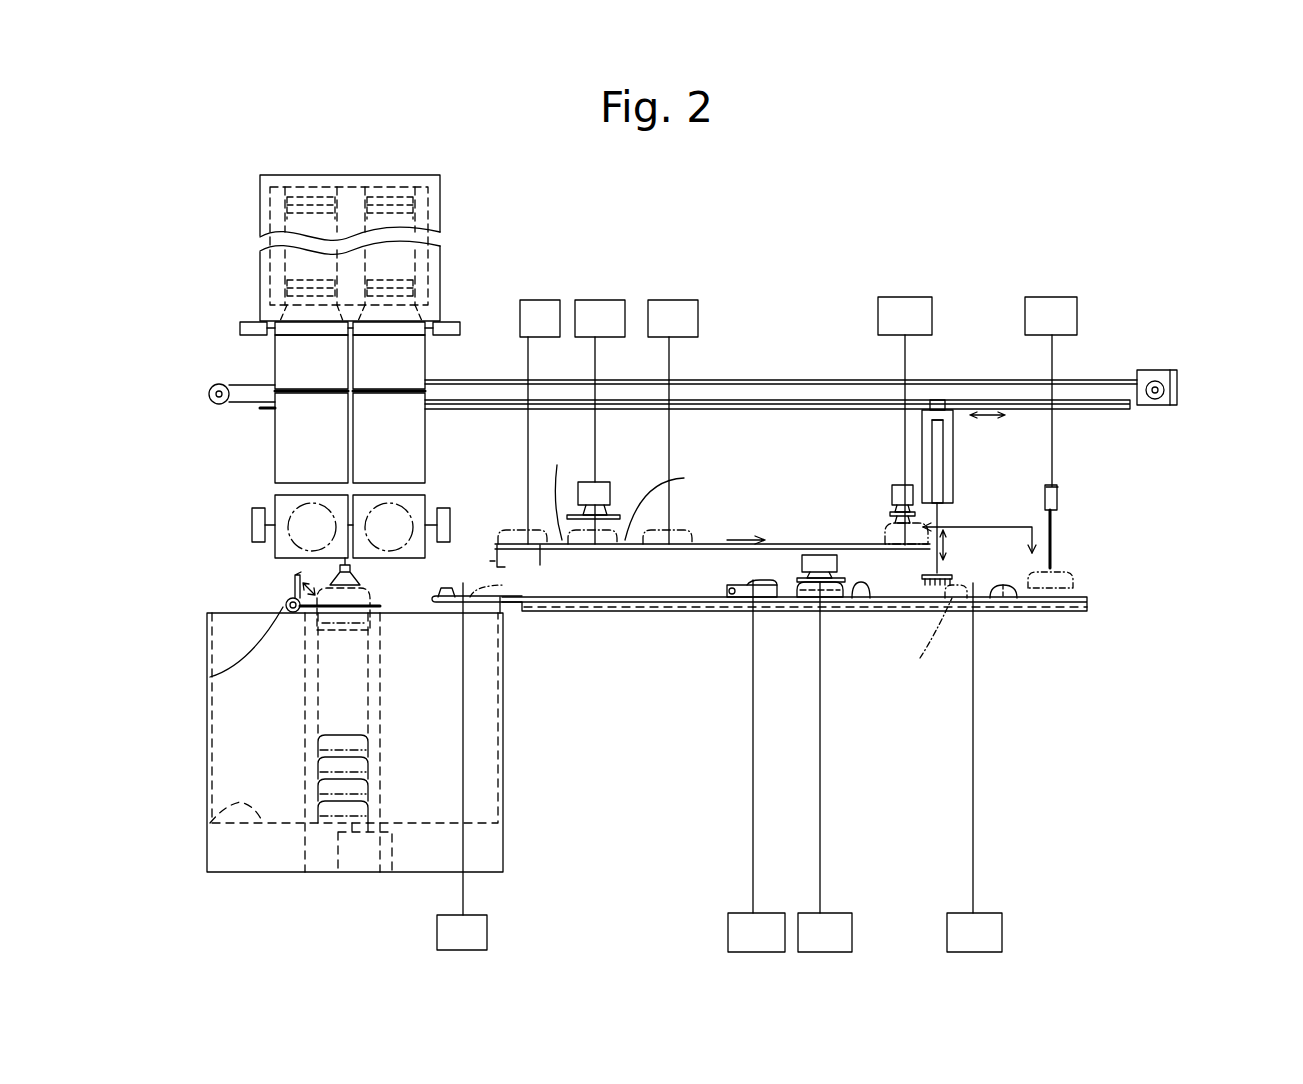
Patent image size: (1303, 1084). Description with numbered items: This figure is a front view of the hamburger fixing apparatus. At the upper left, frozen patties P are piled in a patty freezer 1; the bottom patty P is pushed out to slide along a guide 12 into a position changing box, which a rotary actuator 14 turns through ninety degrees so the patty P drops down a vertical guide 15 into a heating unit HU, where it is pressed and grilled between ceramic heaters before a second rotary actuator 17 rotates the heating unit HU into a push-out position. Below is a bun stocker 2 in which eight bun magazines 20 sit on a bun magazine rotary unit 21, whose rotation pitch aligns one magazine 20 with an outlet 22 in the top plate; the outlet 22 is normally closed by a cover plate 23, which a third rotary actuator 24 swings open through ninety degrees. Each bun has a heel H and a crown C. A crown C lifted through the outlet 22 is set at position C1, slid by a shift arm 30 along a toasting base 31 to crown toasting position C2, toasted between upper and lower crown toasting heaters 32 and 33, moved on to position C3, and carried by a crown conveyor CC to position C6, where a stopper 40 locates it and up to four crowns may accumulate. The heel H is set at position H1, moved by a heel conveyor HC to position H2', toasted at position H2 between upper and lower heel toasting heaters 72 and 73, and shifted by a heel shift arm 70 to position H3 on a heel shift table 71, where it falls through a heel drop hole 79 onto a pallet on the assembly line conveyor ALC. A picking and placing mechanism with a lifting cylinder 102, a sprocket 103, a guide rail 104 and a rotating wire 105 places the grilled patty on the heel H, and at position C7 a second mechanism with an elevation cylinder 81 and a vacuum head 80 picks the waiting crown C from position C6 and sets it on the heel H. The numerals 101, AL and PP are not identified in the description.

The patty freezer 1 is at (250, 197).
The patty P is at (415, 205).
The rotary actuator 14 is at (250, 322).
The guide 12 is at (290, 363).
The vertical guide 15 is at (290, 452).
The second rotary actuator 17 is at (250, 520).
The sprocket 103 is at (216, 405).
The heating unit HU is at (272, 545).
The rotating wire 105 is at (1097, 376).
The guide rail 104 is at (1127, 409).
The stopper 40 is at (918, 500).
The lifting cylinder 102 is at (930, 470).
The gripper head 101 is at (960, 572).
The alignment position AL is at (970, 583).
The position C6 is at (905, 421).
The position C7 is at (1051, 392).
The pressing plunger PP is at (1057, 498).
The crown C is at (540, 552).
The crown conveyor CC is at (643, 542).
The shift arm 30 is at (498, 537).
The toasting base 31 is at (559, 482).
The upper crown toasting heater 32 is at (608, 472).
The lower crown toasting heater 33 is at (673, 497).
The position C1 is at (542, 422).
The crown toasting position C2 is at (600, 422).
The position C3 is at (673, 422).
The set position H1 is at (462, 767).
The position H2' is at (756, 766).
The position H2 is at (825, 767).
The position H3 is at (974, 767).
The heel conveyor HC is at (512, 613).
The heel H is at (711, 623).
The assembly line conveyor ALC is at (1090, 603).
The heel drop hole 79 is at (1010, 602).
The heel shift arm 70 is at (730, 592).
The heel shift table 71 is at (862, 598).
The upper heel toasting heater 72 is at (803, 553).
The lower heel toasting heater 73 is at (797, 587).
The elevation cylinder 81 is at (890, 497).
The vacuum head 80 is at (885, 532).
The outlet 22 is at (363, 590).
The cover plate 23 is at (292, 592).
The third rotary actuator 24 is at (210, 677).
The bun stocker 2 is at (195, 797).
The bun magazine 20 is at (305, 685).
The bun magazine rotary unit 21 is at (215, 818).